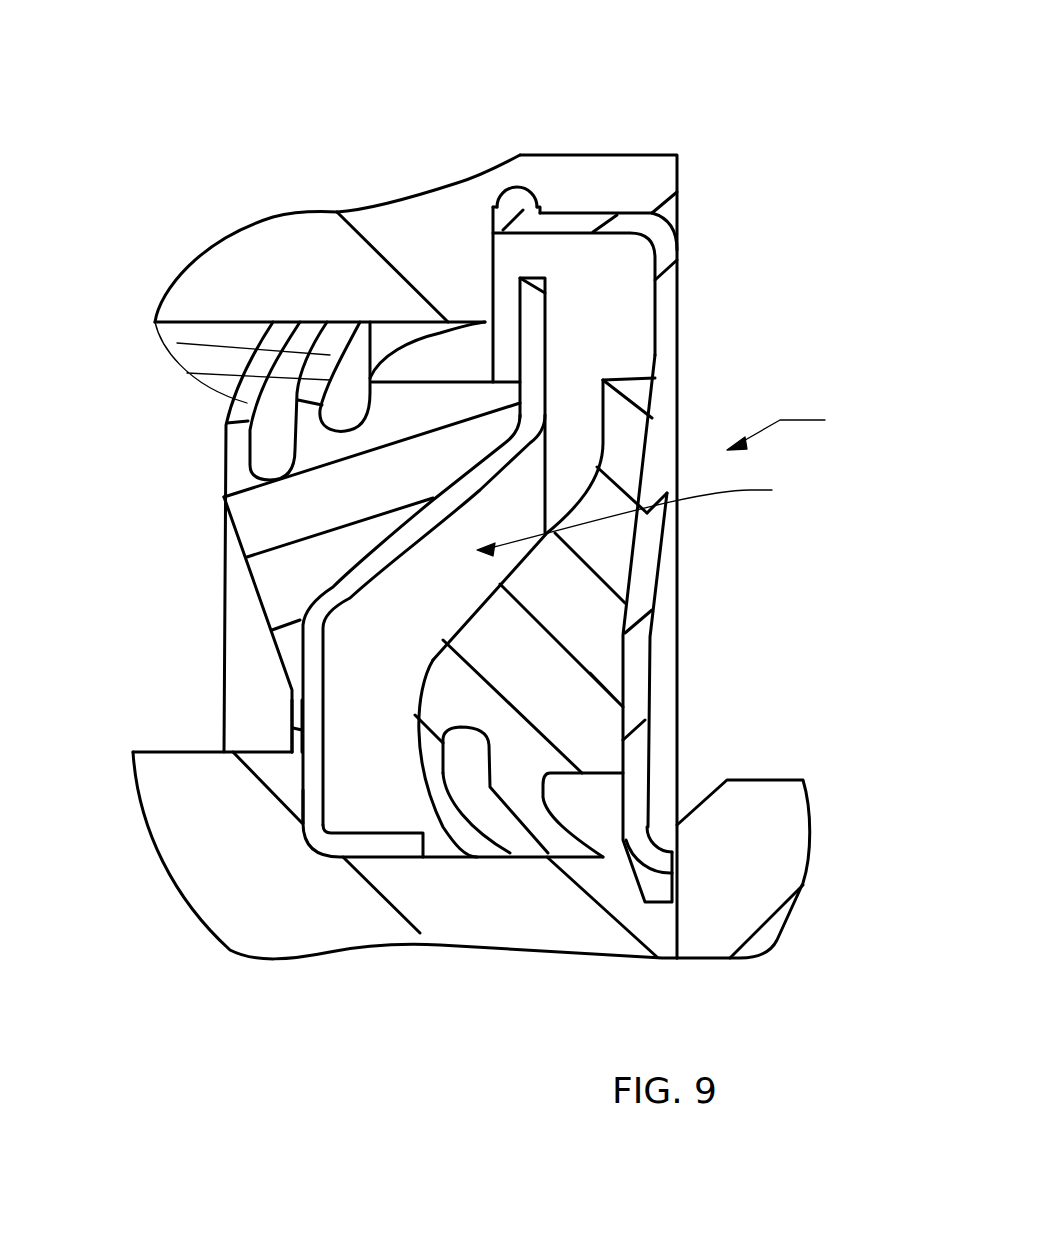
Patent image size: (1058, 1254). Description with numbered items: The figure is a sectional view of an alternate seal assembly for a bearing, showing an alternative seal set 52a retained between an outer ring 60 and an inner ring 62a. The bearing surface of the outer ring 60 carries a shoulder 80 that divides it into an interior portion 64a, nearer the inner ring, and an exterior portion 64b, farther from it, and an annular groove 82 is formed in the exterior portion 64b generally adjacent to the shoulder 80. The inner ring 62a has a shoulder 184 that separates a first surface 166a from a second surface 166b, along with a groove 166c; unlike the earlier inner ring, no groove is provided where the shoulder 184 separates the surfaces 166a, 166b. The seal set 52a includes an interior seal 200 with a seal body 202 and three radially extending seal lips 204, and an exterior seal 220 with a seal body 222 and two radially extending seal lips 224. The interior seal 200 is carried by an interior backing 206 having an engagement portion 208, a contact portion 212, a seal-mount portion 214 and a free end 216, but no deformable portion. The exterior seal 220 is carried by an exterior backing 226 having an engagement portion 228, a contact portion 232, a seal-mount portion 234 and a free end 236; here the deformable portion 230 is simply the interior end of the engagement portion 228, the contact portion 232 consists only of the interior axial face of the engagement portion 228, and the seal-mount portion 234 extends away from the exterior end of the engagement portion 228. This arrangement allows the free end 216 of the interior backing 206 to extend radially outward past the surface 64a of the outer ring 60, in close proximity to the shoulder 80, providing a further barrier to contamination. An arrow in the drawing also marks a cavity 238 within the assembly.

The seal set 52a is at (798, 434).
The outer ring 60 is at (217, 293).
The inner ring 62a is at (203, 860).
The interior portion 64a is at (327, 317).
The exterior portion 64b is at (567, 207).
The shoulder 80 is at (493, 270).
The annular groove 82 is at (517, 188).
The surface 166a is at (237, 753).
The surface 166b is at (453, 857).
The groove 166c is at (672, 902).
The shoulder 184 is at (305, 790).
The interior seal 200 is at (263, 610).
The seal body 202 is at (280, 513).
The seal lips 204 is at (155, 320).
The interior backing 206 is at (300, 690).
The engagement portion 208 is at (377, 847).
The contact portion 212 is at (313, 767).
The seal-mount portion 214 is at (407, 553).
The free end 216 is at (547, 347).
The exterior seal 220 is at (655, 403).
The seal body 222 is at (575, 680).
The seal lips 224 is at (567, 827).
The exterior backing 226 is at (673, 228).
The engagement portion 228 is at (598, 220).
The deformable portion 230 is at (510, 205).
The contact portion 232 is at (492, 213).
The seal-mount portion 234 is at (655, 600).
The free end 236 is at (663, 858).
The cavity 238 is at (647, 518).